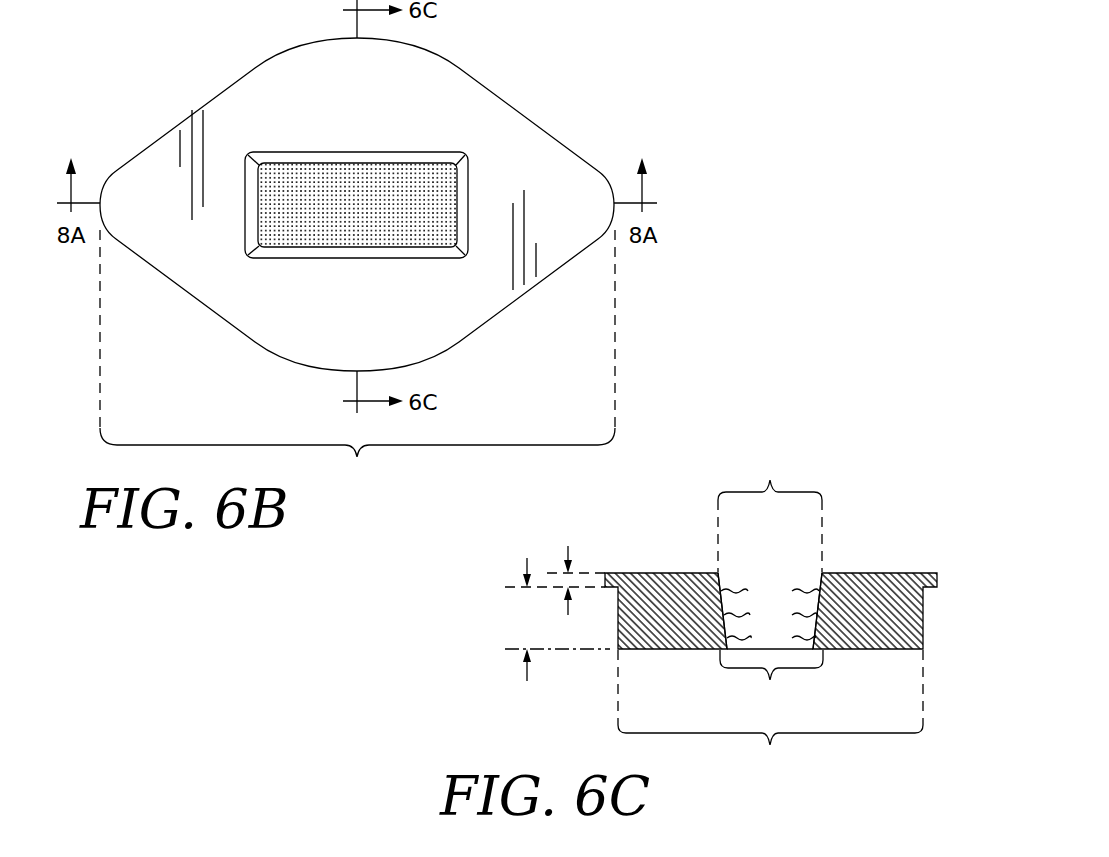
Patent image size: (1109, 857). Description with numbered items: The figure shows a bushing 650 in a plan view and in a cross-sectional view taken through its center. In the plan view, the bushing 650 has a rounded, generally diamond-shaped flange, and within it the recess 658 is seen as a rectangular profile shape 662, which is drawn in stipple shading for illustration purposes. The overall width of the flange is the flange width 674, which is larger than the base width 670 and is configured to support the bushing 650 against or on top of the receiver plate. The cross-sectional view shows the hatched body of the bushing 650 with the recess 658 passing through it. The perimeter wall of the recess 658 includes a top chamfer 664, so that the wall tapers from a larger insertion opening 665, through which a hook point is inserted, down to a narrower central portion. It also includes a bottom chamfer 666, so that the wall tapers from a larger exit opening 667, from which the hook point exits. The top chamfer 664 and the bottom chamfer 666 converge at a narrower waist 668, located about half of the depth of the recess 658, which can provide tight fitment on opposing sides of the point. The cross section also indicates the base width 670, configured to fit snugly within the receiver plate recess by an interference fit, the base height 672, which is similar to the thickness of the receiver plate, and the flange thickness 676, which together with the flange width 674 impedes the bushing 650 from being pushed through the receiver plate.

In FIG. 6B, the bushing 650 is at (196, 70).
In FIG. 6C, the bushing 650 is at (859, 535).
In FIG. 6B, the rectangular profile shape 662 is at (334, 216).
In FIG. 6B, the flange width 674 is at (357, 362).
In FIG. 6C, the insertion opening 665 is at (770, 512).
In FIG. 6C, the recess 658 is at (737, 580).
In FIG. 6C, the top chamfer 664 is at (770, 587).
In FIG. 6C, the waist 668 is at (770, 612).
In FIG. 6C, the bottom chamfer 666 is at (771, 637).
In FIG. 6C, the exit opening 667 is at (771, 680).
In FIG. 6C, the base width 670 is at (770, 711).
In FIG. 6C, the base height 672 is at (555, 634).
In FIG. 6C, the flange thickness 676 is at (555, 565).